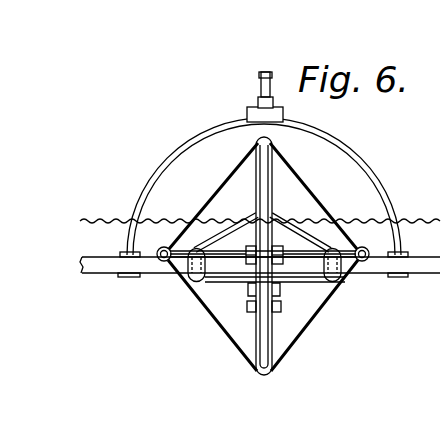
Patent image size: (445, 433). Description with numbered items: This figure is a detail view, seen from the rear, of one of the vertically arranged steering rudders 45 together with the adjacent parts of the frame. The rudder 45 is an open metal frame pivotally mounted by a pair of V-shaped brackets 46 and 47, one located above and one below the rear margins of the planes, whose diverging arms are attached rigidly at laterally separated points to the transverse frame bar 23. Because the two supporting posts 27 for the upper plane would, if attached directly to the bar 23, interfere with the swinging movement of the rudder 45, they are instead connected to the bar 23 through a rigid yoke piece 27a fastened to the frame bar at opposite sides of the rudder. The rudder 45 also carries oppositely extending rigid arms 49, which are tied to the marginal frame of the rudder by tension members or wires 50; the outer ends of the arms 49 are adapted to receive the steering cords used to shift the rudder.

The frame bar 23 is at (103, 268).
The supporting post 27 is at (260, 73).
The yoke piece 27a is at (361, 147).
The steering rudder 45 is at (256, 350).
The bracket 46 is at (242, 220).
The bracket 47 is at (207, 302).
The rigid arm 49 is at (158, 268).
The tension member 50 is at (193, 280).